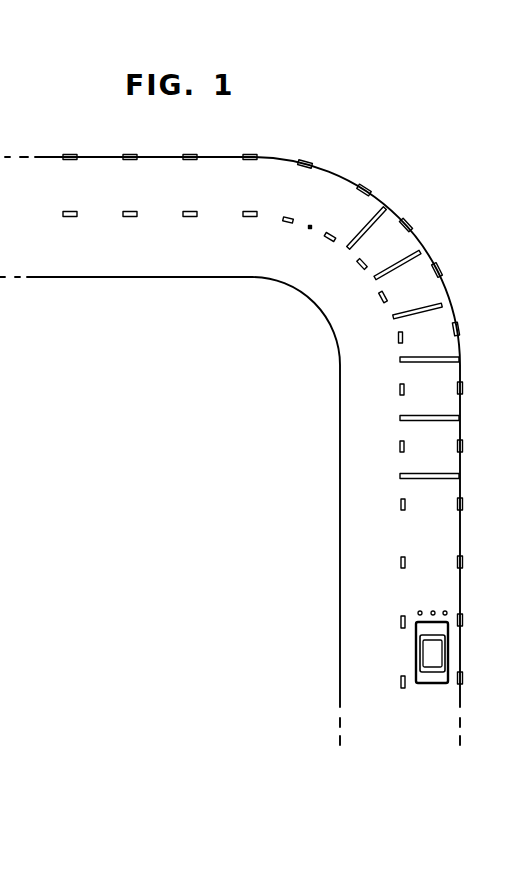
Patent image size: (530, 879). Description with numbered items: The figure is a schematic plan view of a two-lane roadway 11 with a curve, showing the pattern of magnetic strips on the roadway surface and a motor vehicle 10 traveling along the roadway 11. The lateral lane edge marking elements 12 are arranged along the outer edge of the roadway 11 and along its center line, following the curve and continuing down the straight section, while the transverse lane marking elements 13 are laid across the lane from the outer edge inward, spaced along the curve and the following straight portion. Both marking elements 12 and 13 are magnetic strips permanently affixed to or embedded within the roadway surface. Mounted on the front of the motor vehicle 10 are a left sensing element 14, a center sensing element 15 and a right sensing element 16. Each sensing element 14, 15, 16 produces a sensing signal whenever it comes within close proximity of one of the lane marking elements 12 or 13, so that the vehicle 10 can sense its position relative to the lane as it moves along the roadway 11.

The motor vehicle 10 is at (448, 653).
The roadway 11 is at (357, 610).
The lateral lane edge marking elements 12 is at (125, 155).
The transverse lane marking elements 13 is at (385, 214).
The left sensing element 14 is at (418, 610).
The center sensing element 15 is at (433, 609).
The right sensing element 16 is at (448, 610).